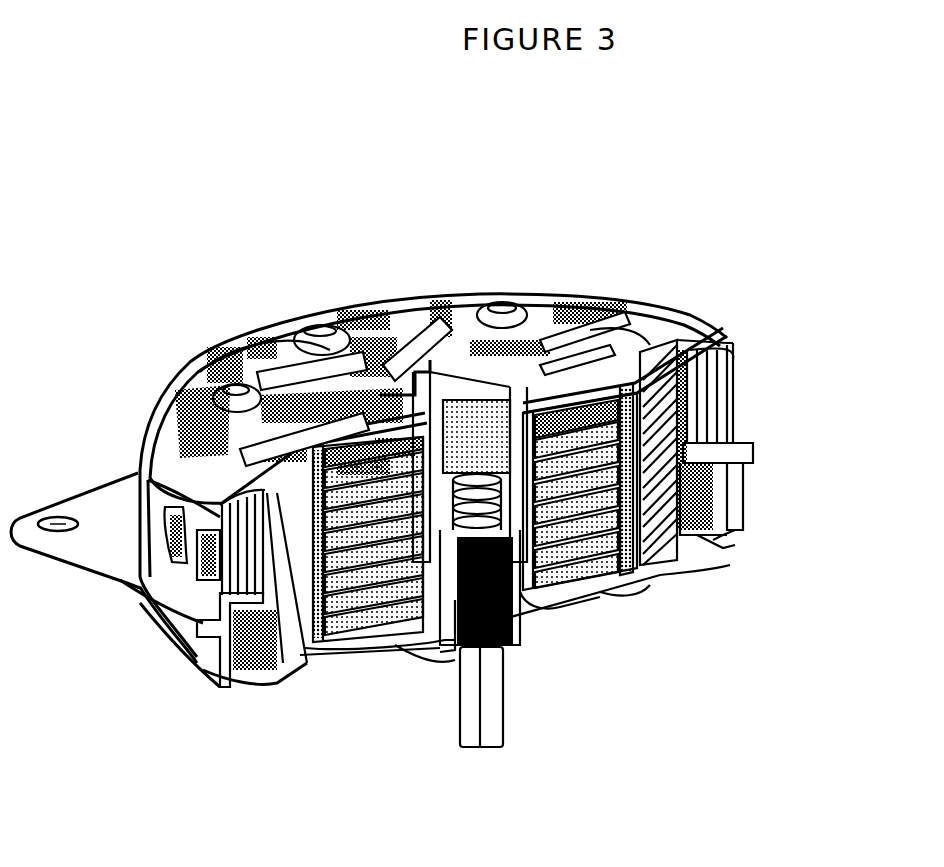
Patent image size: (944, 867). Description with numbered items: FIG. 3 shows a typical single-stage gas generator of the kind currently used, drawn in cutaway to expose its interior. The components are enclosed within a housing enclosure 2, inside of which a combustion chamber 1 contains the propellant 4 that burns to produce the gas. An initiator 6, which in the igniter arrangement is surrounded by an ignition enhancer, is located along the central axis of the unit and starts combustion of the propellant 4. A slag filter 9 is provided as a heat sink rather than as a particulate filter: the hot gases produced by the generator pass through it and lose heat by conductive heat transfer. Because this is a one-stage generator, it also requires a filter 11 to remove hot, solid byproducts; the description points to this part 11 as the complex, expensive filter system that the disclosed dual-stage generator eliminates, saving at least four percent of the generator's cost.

The combustion chamber 1 is at (298, 575).
The housing enclosure 2 is at (560, 296).
The propellant 4 is at (600, 570).
The initiator 6 is at (500, 616).
The slag filter 9 is at (722, 545).
The filter 11 is at (727, 407).